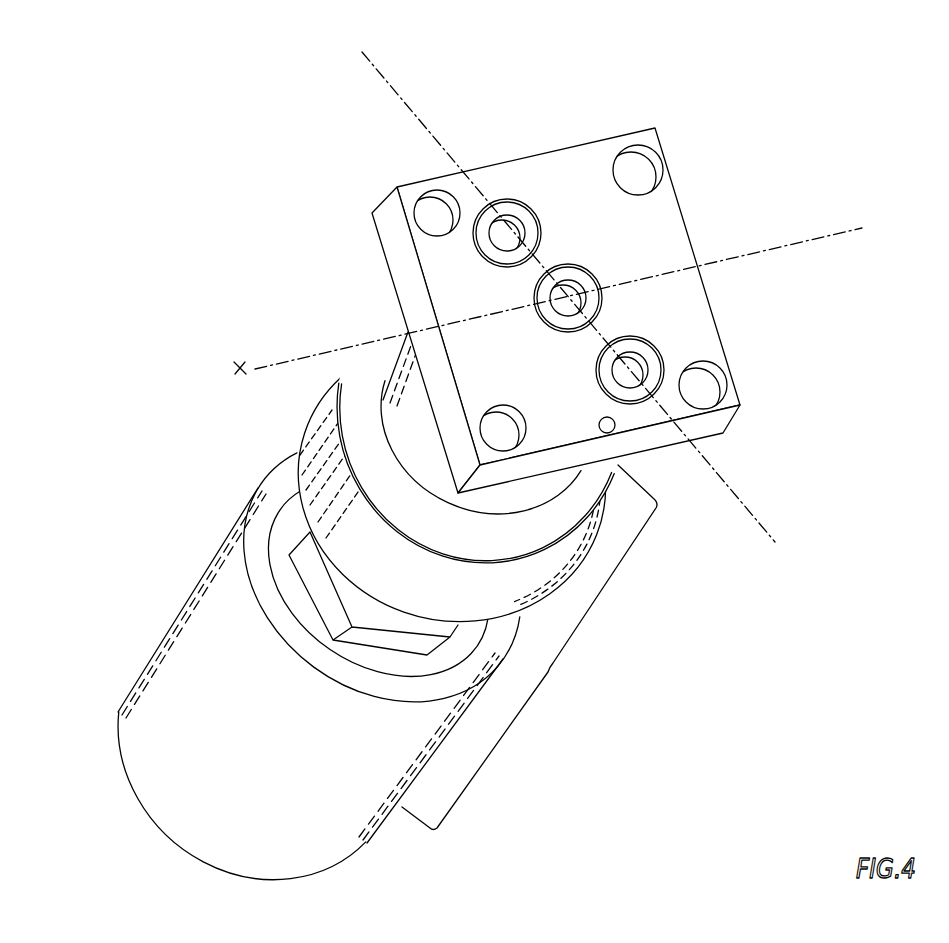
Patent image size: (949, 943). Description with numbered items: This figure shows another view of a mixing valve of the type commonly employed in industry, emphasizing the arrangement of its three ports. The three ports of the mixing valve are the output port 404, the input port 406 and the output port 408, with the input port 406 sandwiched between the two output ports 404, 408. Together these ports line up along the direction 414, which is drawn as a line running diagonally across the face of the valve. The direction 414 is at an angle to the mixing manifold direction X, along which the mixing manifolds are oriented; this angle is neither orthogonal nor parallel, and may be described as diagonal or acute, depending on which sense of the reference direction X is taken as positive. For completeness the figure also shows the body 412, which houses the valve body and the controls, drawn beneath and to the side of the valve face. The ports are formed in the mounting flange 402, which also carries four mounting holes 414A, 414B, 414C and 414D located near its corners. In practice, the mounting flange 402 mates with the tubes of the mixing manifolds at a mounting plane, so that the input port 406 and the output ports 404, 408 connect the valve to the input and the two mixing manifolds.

The mounting flange 402 is at (710, 293).
The output port 404 is at (633, 358).
The input port 406 is at (562, 282).
The output port 408 is at (522, 230).
The body 412 is at (553, 667).
The direction 414 is at (763, 530).
The mounting hole 414A is at (710, 378).
The mounting hole 414B is at (645, 164).
The mounting hole 414C is at (423, 207).
The mounting hole 414D is at (508, 421).